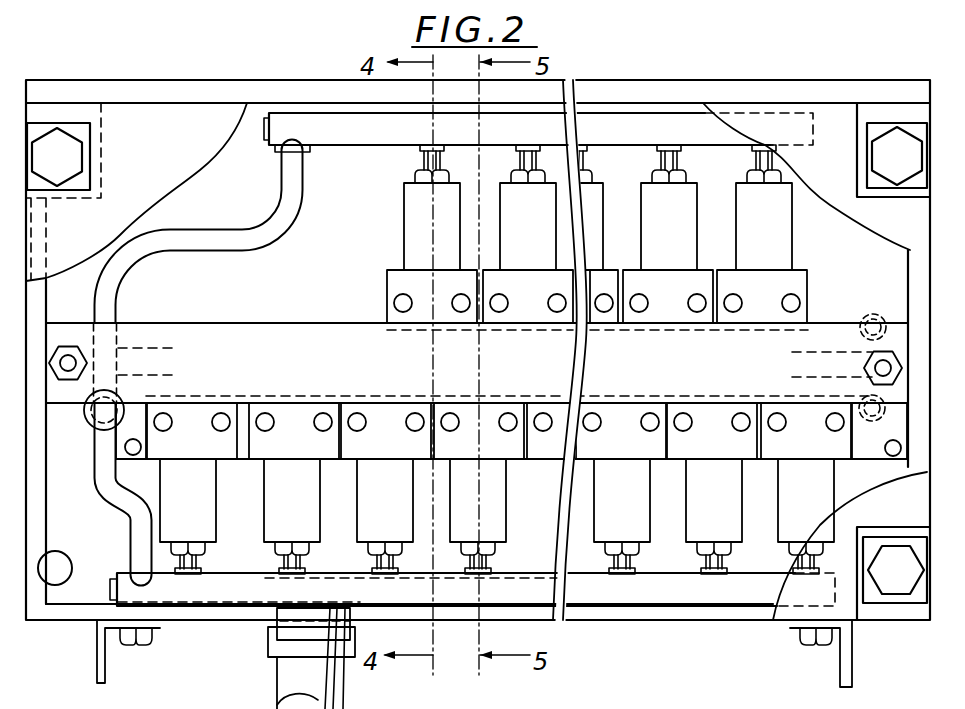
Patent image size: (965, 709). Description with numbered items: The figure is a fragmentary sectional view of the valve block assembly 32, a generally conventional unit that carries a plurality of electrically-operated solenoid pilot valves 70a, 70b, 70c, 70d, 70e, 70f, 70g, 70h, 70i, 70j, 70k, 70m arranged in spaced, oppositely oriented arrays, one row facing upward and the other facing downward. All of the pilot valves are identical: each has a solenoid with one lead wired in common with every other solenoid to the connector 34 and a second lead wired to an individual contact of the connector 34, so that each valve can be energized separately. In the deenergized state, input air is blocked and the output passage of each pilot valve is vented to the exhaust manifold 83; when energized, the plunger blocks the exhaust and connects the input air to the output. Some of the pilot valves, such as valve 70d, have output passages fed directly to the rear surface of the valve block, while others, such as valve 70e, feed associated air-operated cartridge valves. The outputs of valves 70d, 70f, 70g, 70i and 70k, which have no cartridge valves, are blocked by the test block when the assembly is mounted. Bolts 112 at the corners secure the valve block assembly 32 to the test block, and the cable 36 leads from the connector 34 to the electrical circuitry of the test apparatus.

The valve block assembly 32 is at (210, 74).
The exhaust manifold 83 is at (296, 124).
The bolts 112 is at (67, 159).
The solenoid pilot valve 70a is at (210, 521).
The solenoid pilot valve 70b is at (310, 522).
The solenoid pilot valve 70c is at (403, 502).
The solenoid pilot valve 70d is at (418, 226).
The solenoid pilot valve 70e is at (497, 490).
The solenoid pilot valve 70f is at (518, 248).
The solenoid pilot valve 70g is at (596, 202).
The solenoid pilot valve 70h is at (638, 530).
The solenoid pilot valve 70i is at (688, 197).
The solenoid pilot valve 70j is at (730, 530).
The solenoid pilot valve 70k is at (778, 237).
The solenoid pilot valve 70m is at (823, 492).
The connector 34 is at (288, 628).
The cable 36 is at (346, 698).